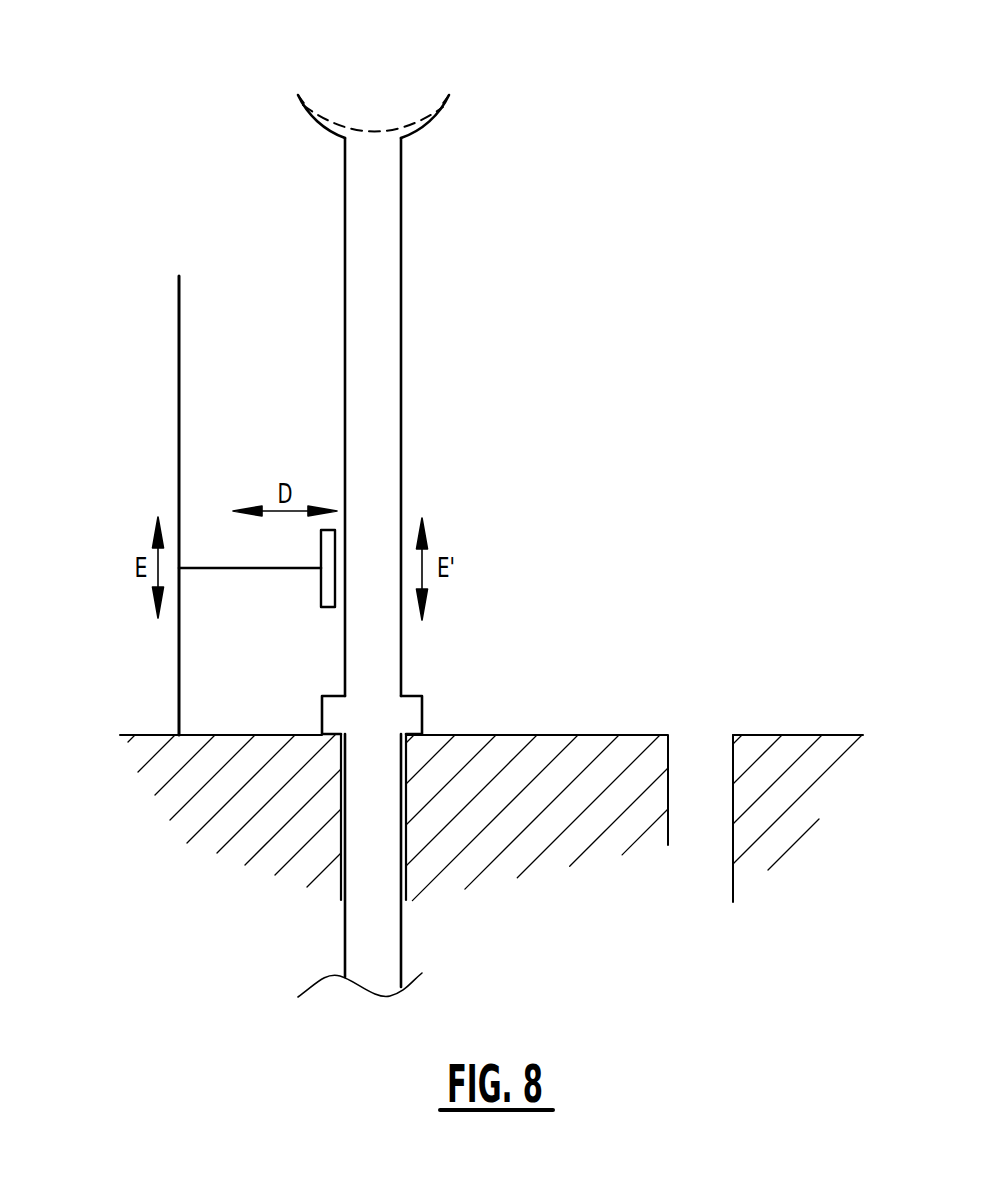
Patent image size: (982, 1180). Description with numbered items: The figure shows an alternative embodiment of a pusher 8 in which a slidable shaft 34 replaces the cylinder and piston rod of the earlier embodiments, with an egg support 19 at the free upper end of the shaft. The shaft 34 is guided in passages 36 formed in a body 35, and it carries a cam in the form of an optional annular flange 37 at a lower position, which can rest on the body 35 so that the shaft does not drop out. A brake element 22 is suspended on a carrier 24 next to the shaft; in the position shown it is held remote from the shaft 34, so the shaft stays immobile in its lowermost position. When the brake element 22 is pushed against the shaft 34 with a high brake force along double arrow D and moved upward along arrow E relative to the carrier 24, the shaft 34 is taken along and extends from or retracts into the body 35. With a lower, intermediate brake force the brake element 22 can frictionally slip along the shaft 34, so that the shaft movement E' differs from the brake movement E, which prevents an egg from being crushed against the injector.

The pusher 8 is at (236, 118).
The egg support 19 is at (335, 123).
The brake element 22 is at (327, 610).
The carrier 24 is at (179, 367).
The slidable shaft 34 is at (387, 312).
The body 35 is at (538, 748).
The passages 36 is at (341, 818).
The annular flange 37 is at (413, 705).